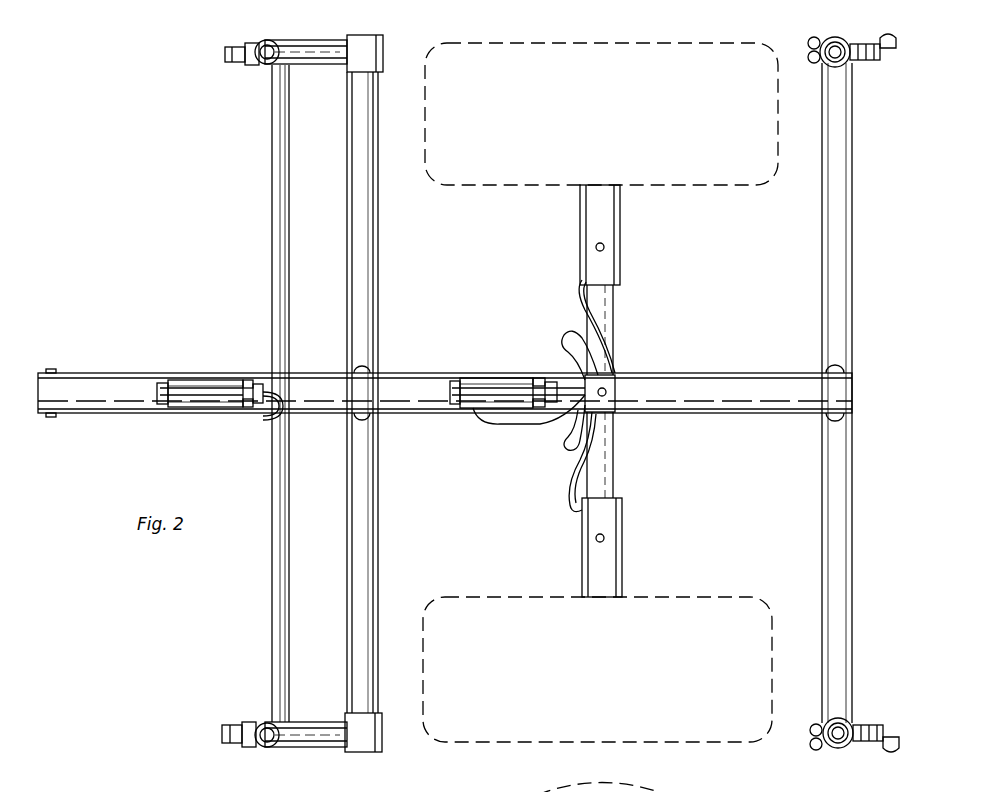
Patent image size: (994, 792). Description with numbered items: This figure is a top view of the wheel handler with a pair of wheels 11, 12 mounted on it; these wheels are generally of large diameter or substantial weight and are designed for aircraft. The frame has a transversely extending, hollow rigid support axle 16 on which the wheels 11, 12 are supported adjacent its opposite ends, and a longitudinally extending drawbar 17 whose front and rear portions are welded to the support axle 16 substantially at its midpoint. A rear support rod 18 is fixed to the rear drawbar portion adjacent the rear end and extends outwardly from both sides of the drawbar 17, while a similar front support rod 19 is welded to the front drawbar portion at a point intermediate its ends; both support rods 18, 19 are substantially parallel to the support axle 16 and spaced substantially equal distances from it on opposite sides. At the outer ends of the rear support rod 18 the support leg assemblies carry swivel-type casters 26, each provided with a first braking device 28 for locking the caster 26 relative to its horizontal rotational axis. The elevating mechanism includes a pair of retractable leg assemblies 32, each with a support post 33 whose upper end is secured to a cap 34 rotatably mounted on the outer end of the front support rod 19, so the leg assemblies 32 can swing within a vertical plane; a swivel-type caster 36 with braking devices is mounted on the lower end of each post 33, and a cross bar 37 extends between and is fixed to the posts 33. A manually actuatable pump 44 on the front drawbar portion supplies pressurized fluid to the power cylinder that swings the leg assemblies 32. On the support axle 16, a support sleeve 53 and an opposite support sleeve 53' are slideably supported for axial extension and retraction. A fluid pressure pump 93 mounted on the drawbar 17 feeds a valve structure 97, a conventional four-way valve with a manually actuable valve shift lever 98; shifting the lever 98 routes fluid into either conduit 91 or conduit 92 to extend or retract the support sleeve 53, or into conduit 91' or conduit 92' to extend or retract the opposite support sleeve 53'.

The wheel 11 is at (705, 732).
The wheel 12 is at (662, 62).
The support axle 16 is at (606, 470).
The drawbar 17 is at (122, 412).
The rear support rod 18 is at (848, 222).
The front support rod 19 is at (368, 257).
The caster 26 is at (868, 724).
The first braking device 28 is at (890, 750).
The retractable leg assembly 32 is at (305, 32).
The support post 33 is at (322, 48).
The cap 34 is at (363, 743).
The caster 36 is at (236, 47).
The cross bar 37 is at (283, 173).
The pump 44 is at (213, 380).
The support sleeve 53 is at (621, 547).
The support sleeve 53' is at (623, 235).
The conduit 91 is at (529, 431).
The conduit 91' is at (566, 347).
The conduit 92 is at (565, 484).
The conduit 92' is at (567, 316).
The fluid pressure pump 93 is at (495, 380).
The valve structure 97 is at (616, 375).
The valve shift lever 98 is at (607, 392).